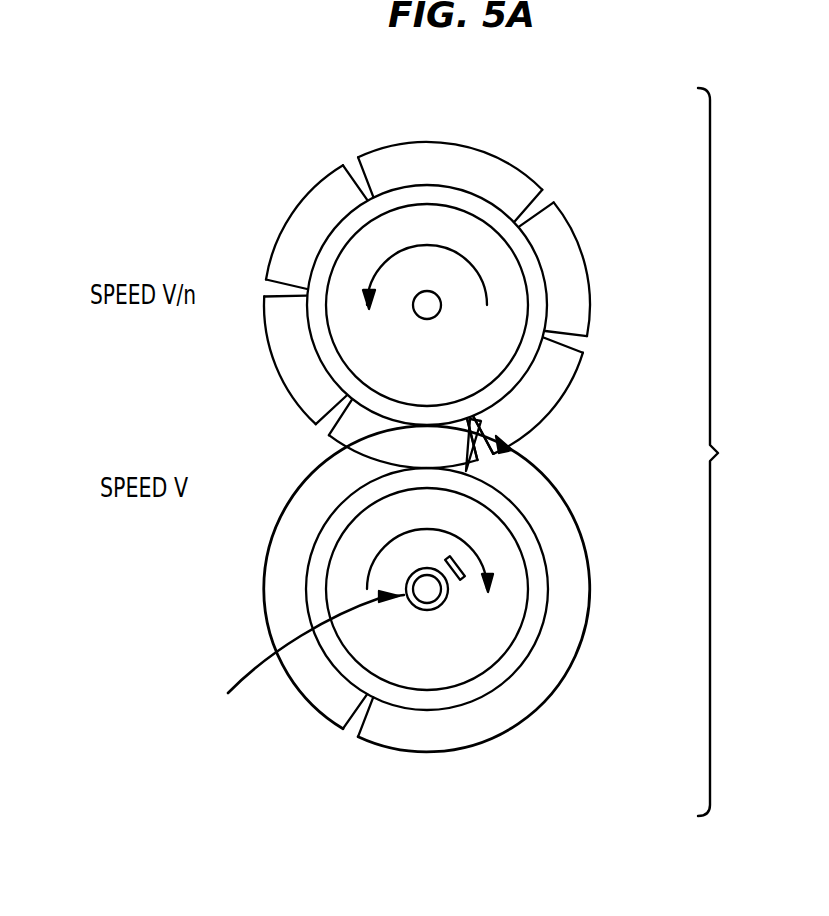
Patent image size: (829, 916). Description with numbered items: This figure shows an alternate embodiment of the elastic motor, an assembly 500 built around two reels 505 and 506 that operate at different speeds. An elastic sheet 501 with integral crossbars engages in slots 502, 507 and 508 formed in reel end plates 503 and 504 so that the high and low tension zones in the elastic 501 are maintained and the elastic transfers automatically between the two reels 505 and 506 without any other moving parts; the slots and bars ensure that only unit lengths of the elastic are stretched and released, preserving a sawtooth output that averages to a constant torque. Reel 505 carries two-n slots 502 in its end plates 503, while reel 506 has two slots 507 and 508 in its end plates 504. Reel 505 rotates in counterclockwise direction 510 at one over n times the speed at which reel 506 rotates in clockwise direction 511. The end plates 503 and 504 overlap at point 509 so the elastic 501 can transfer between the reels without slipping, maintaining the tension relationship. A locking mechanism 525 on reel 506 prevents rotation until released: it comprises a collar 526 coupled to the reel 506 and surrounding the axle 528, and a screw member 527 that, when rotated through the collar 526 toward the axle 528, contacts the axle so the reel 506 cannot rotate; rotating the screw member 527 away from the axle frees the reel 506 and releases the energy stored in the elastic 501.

The multiple-speed wheel assembly 500 is at (730, 452).
The elastic sheet 501 is at (551, 592).
The slots 502 is at (572, 345).
The reel end plate 503 is at (288, 223).
The reel end plate 504 is at (265, 596).
The reel 505 is at (434, 369).
The reel 506 is at (422, 662).
The slot 507 is at (362, 728).
The slot 508 is at (472, 468).
The overlap point 509 is at (486, 417).
The counterclockwise direction 510 is at (428, 245).
The clockwise direction 511 is at (373, 562).
The locking mechanism 525 is at (449, 602).
The collar 526 is at (306, 662).
The screw member 527 is at (484, 563).
The axle 528 is at (433, 609).